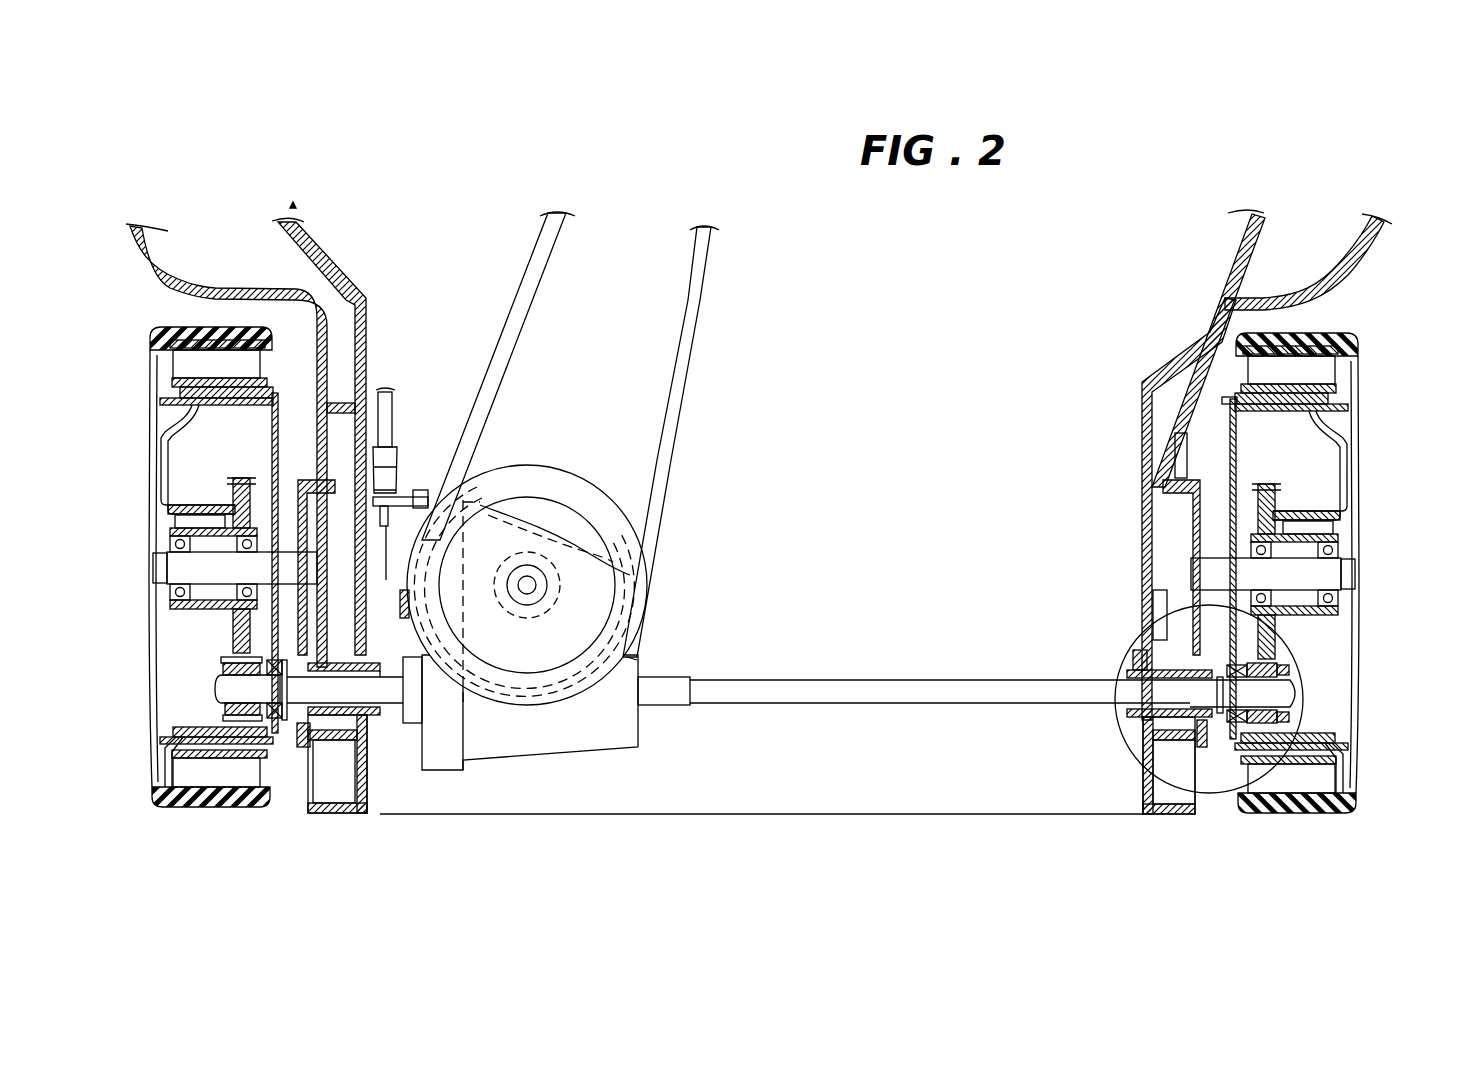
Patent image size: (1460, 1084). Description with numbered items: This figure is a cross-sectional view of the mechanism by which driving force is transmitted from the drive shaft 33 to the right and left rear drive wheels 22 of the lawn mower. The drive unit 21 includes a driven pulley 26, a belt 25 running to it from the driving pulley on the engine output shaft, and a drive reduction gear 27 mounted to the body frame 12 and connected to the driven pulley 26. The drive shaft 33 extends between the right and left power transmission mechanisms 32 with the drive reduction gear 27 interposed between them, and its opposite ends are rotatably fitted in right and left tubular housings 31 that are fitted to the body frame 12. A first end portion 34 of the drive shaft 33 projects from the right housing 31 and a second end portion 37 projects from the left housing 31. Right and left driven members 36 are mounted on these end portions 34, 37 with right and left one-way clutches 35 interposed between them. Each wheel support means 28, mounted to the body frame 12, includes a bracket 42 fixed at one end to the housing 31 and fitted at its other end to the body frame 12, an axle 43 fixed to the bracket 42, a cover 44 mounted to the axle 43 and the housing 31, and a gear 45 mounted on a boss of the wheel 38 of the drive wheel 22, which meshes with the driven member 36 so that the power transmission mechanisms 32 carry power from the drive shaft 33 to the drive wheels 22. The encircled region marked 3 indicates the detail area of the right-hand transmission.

The body frame 12 is at (296, 206).
The drive wheel 22 is at (216, 327).
The gear 45 is at (262, 510).
The cover 44 is at (340, 420).
The wheel support means 28 is at (327, 470).
The power transmission mechanism 32 is at (320, 600).
The bracket 42 is at (398, 497).
The axle 43 is at (385, 520).
The belt 25 is at (705, 322).
The drive unit 21 is at (882, 432).
The driven pulley 26 is at (617, 500).
The drive reduction gear 27 is at (684, 645).
The drive shaft 33 is at (897, 678).
The tubular housing 31 is at (382, 722).
The second end portion 37 is at (232, 690).
The first end portion 34 is at (1262, 686).
The one-way clutch 35 is at (230, 727).
The driven member 36 is at (248, 745).
The wheel 38 is at (160, 745).
The section line for FIG. 3 is at (1210, 793).